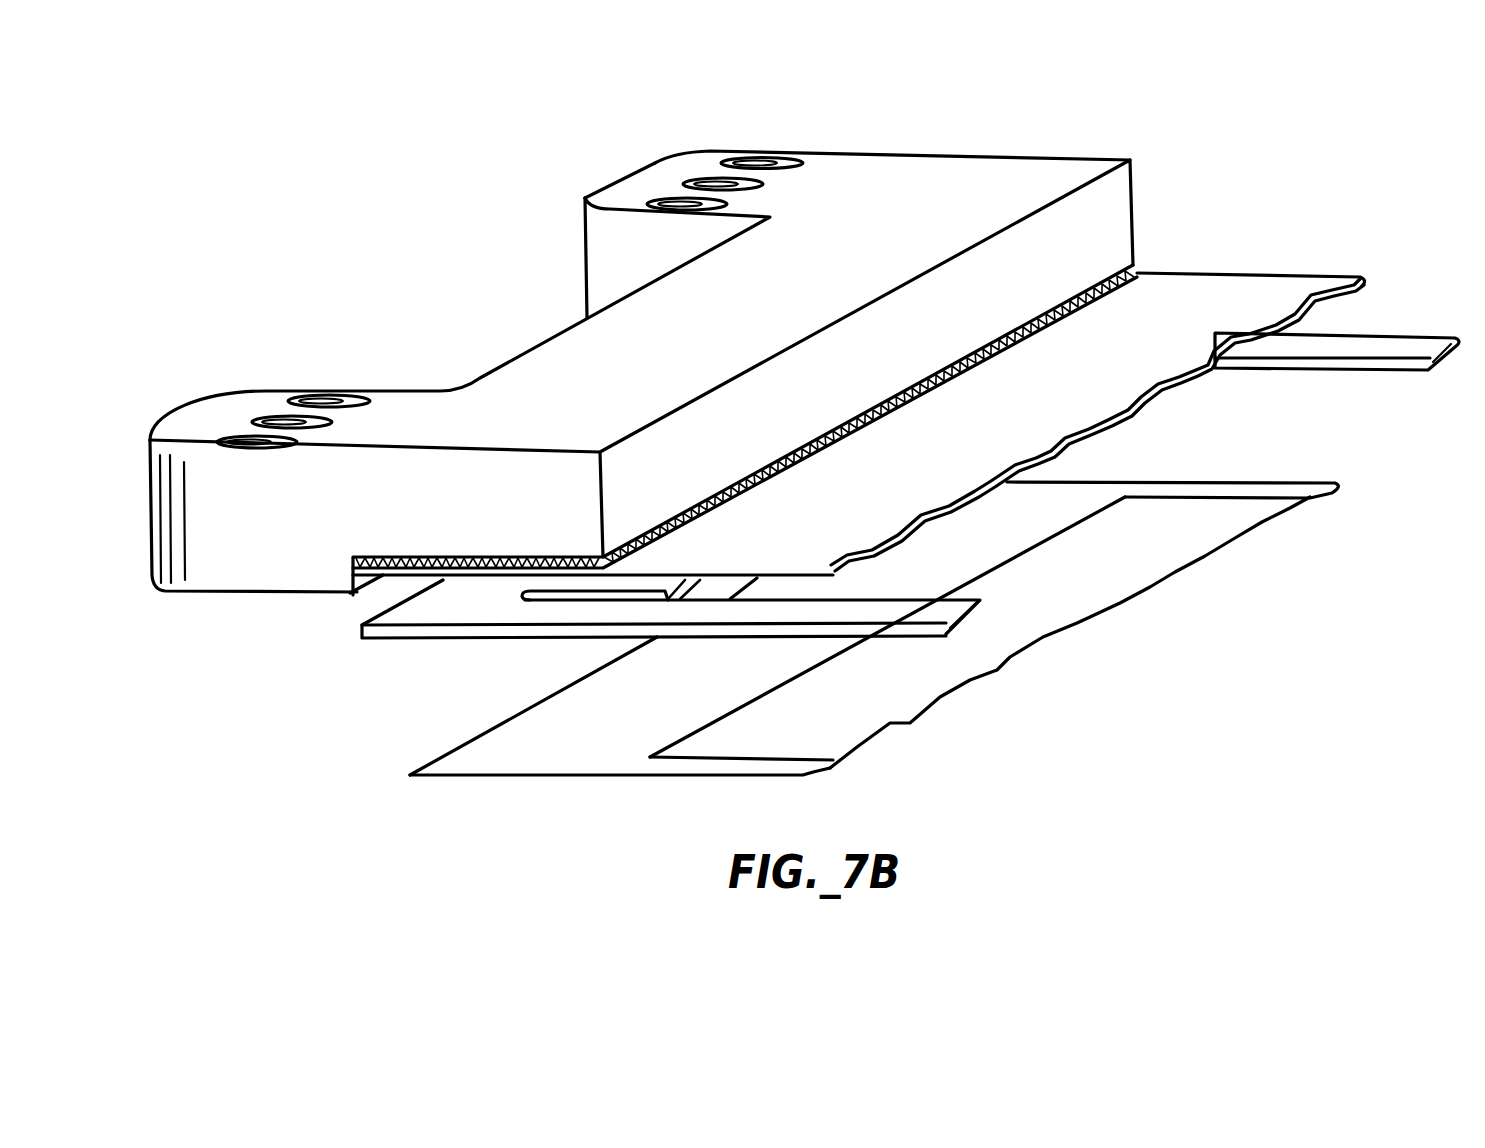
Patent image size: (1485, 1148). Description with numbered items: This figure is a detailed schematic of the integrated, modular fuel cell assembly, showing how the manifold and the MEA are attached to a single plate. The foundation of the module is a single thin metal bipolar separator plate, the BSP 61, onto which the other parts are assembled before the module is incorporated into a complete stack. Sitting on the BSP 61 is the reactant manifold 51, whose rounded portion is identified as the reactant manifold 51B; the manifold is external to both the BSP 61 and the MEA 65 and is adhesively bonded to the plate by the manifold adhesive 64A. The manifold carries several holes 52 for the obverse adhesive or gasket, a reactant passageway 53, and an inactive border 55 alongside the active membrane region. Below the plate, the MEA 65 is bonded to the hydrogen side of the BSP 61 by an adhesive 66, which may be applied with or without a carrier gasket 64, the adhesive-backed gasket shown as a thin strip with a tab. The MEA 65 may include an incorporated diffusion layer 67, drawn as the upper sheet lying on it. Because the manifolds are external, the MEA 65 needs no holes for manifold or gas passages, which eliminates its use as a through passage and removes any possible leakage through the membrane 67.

The reactant manifold 51 is at (562, 333).
The reactant manifold 51B is at (593, 192).
The hole 52 is at (247, 438).
The reactant passageway 53 is at (283, 420).
The inactive border 55 is at (713, 183).
The bipolar separator plate (BSP) 61 is at (1168, 290).
The carrier gasket 64 is at (500, 617).
The manifold adhesive 64A is at (350, 562).
The MEA 65 is at (408, 778).
The adhesive 66 is at (538, 767).
The diffusion layer 67 is at (718, 748).